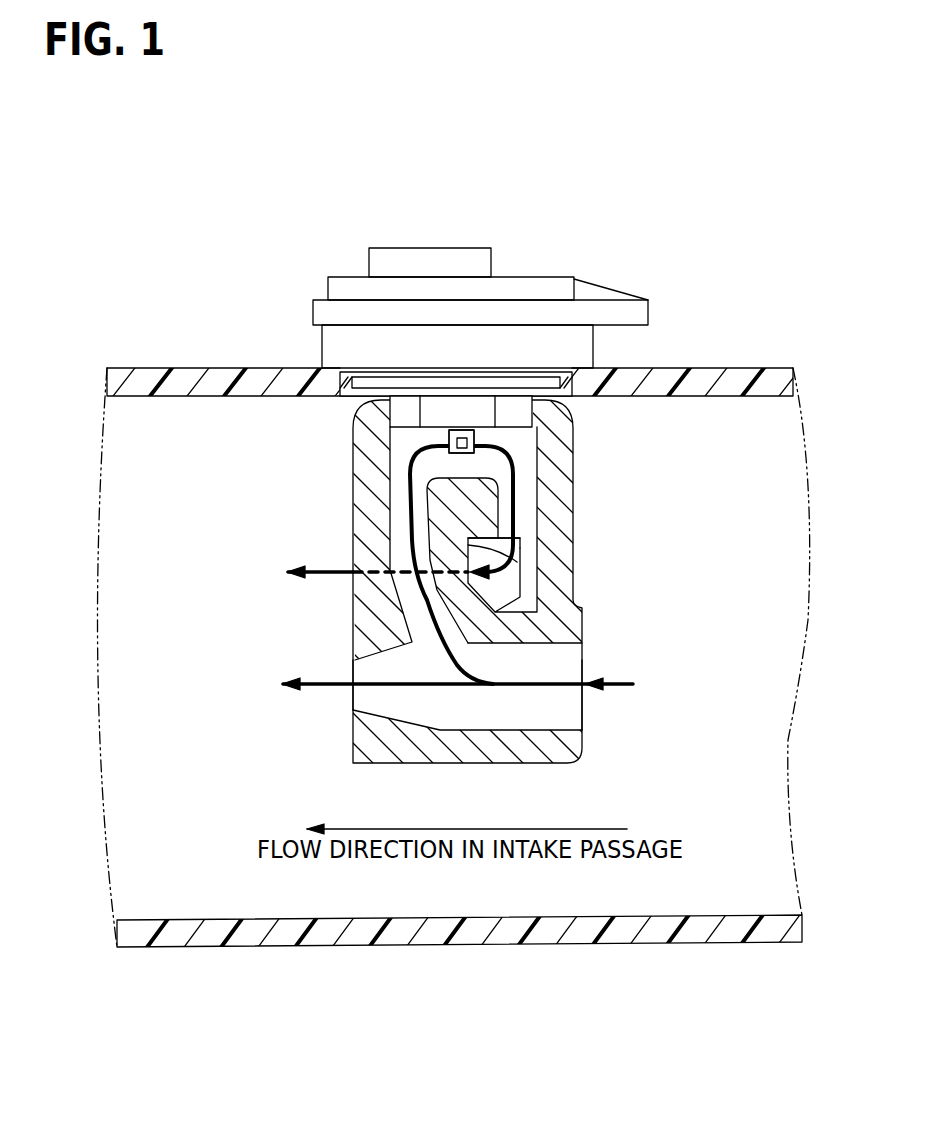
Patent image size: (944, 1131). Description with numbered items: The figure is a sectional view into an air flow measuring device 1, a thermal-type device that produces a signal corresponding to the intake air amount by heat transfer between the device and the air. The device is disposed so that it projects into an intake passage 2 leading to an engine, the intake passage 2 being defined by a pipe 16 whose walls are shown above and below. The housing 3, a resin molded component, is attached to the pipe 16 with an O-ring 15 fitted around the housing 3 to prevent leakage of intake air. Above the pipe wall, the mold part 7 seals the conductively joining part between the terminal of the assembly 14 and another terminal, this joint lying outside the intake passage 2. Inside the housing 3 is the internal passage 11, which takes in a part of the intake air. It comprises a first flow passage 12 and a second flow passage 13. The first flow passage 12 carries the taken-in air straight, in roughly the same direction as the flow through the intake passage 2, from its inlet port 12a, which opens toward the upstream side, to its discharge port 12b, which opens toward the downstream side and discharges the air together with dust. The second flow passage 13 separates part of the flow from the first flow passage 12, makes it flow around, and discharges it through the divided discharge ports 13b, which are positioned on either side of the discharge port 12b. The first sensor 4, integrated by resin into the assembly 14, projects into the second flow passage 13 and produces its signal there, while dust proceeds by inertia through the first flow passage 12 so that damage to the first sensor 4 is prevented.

The air flow measuring device 1 is at (592, 184).
The intake passage 2 is at (202, 432).
The housing 3 is at (352, 474).
The first sensor 4 is at (462, 437).
The mold part 7 is at (373, 345).
The internal passage 11 is at (472, 595).
The first flow passage 12 is at (543, 663).
The inlet port 12a is at (585, 702).
The discharge port 12b is at (352, 697).
The second flow passage 13 is at (518, 458).
The discharge ports 13b is at (490, 553).
The assembly 14 is at (512, 338).
The O-ring 15 is at (567, 380).
The pipe 16 is at (735, 382).